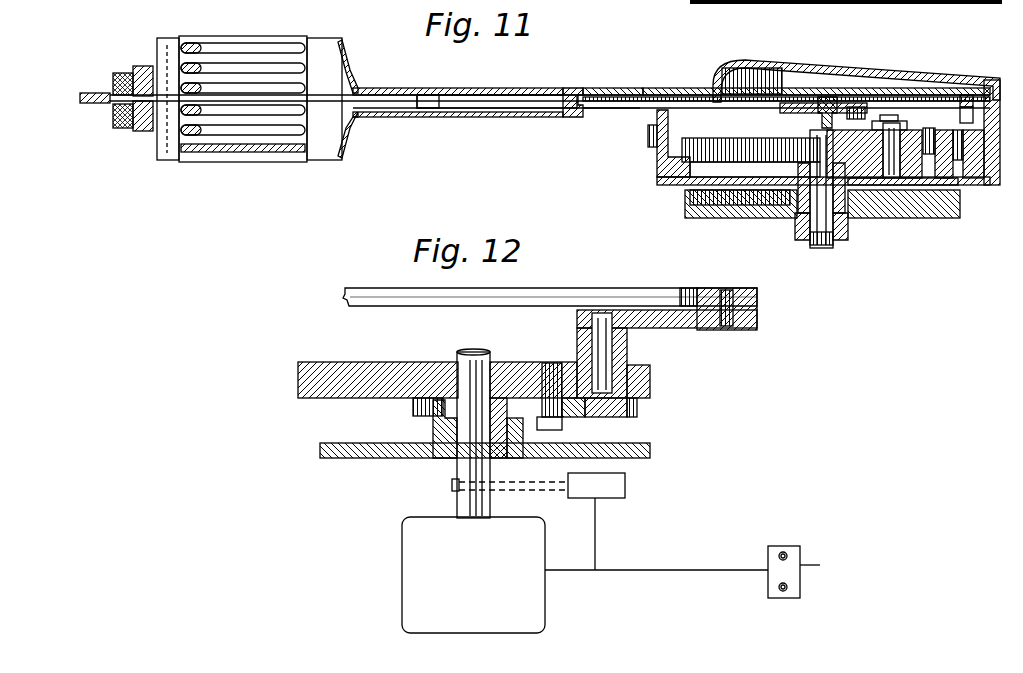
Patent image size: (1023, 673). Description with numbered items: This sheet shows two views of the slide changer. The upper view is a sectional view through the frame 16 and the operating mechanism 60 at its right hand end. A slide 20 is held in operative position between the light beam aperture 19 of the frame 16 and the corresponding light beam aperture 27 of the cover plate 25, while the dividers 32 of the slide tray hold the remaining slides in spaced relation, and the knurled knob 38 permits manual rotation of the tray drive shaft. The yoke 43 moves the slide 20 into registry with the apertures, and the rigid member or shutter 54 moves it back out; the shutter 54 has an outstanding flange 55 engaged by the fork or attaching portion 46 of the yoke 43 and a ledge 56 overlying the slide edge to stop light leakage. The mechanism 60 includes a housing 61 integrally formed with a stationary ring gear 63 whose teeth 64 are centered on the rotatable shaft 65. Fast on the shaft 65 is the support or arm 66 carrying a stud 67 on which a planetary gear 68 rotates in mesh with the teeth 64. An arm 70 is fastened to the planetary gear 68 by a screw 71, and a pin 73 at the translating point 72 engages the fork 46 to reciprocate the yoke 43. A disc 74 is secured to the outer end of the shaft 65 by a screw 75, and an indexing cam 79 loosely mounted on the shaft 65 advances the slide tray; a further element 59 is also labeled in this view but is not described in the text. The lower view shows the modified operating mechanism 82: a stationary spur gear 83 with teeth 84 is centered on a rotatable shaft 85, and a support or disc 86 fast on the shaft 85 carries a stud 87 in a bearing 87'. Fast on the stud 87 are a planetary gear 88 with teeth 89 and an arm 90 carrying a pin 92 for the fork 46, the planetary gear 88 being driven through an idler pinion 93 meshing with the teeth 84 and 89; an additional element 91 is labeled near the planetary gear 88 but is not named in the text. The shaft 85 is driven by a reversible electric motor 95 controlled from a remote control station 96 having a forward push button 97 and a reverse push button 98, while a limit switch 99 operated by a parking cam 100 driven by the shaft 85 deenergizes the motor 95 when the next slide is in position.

In FIG. 11, the frame 16 is at (594, 82).
In FIG. 11, the light beam aperture 19 is at (487, 90).
In FIG. 11, the slide 20 is at (433, 109).
In FIG. 11, the cover plate 25 is at (386, 116).
In FIG. 11, the light beam aperture 27 is at (498, 116).
In FIG. 11, the dividers 32 is at (255, 70).
In FIG. 11, the knurled knob 38 is at (114, 121).
In FIG. 11, the yoke 43 is at (72, 106).
In FIG. 11, the fork or attaching portion 46 is at (968, 98).
In FIG. 12, the fork or attaching portion 46 is at (703, 288).
In FIG. 11, the rigid member or shutter 54 is at (668, 88).
In FIG. 11, the outstanding flange 55 is at (925, 95).
In FIG. 11, the ledge 56 is at (571, 118).
In FIG. 11, the latch 59 is at (832, 118).
In FIG. 11, the operating mechanism 60 is at (657, 201).
In FIG. 11, the housing 61 is at (986, 185).
In FIG. 11, the stationary ring gear 63 is at (657, 158).
In FIG. 11, the teeth 64 is at (727, 147).
In FIG. 11, the rotatable shaft 65 is at (813, 162).
In FIG. 11, the support or arm 66 is at (875, 185).
In FIG. 11, the stud 67 is at (891, 180).
In FIG. 11, the planetary gear 68 is at (912, 180).
In FIG. 11, the arm 70 is at (872, 127).
In FIG. 11, the screw 71 is at (928, 132).
In FIG. 11, the point 72 is at (950, 162).
In FIG. 11, the pin 73 is at (963, 97).
In FIG. 11, the disc 74 is at (741, 218).
In FIG. 11, the screw 75 is at (818, 246).
In FIG. 11, the indexing cam 79 is at (857, 195).
In FIG. 12, the operating mechanism 82 is at (278, 317).
In FIG. 12, the stationary spur gear 83 is at (512, 397).
In FIG. 12, the teeth 84 is at (412, 410).
In FIG. 12, the rotatable shaft 85 is at (462, 363).
In FIG. 12, the support or disc 86 is at (336, 366).
In FIG. 12, the stud 87 is at (667, 354).
In FIG. 12, the bearing 87' is at (661, 381).
In FIG. 12, the planetary gear 88 is at (620, 418).
In FIG. 12, the teeth 89 is at (638, 408).
In FIG. 12, the arm 90 is at (692, 330).
In FIG. 12, the bolt 91 is at (551, 366).
In FIG. 12, the pin 92 is at (728, 330).
In FIG. 12, the idler pinion 93 is at (566, 406).
In FIG. 12, the reversible electric motor 95 is at (545, 613).
In FIG. 12, the control station 96 is at (800, 590).
In FIG. 12, the forward push button 97 is at (778, 556).
In FIG. 12, the reverse push button 98 is at (778, 588).
In FIG. 12, the limit switch 99 is at (625, 485).
In FIG. 12, the parking cam 100 is at (544, 492).